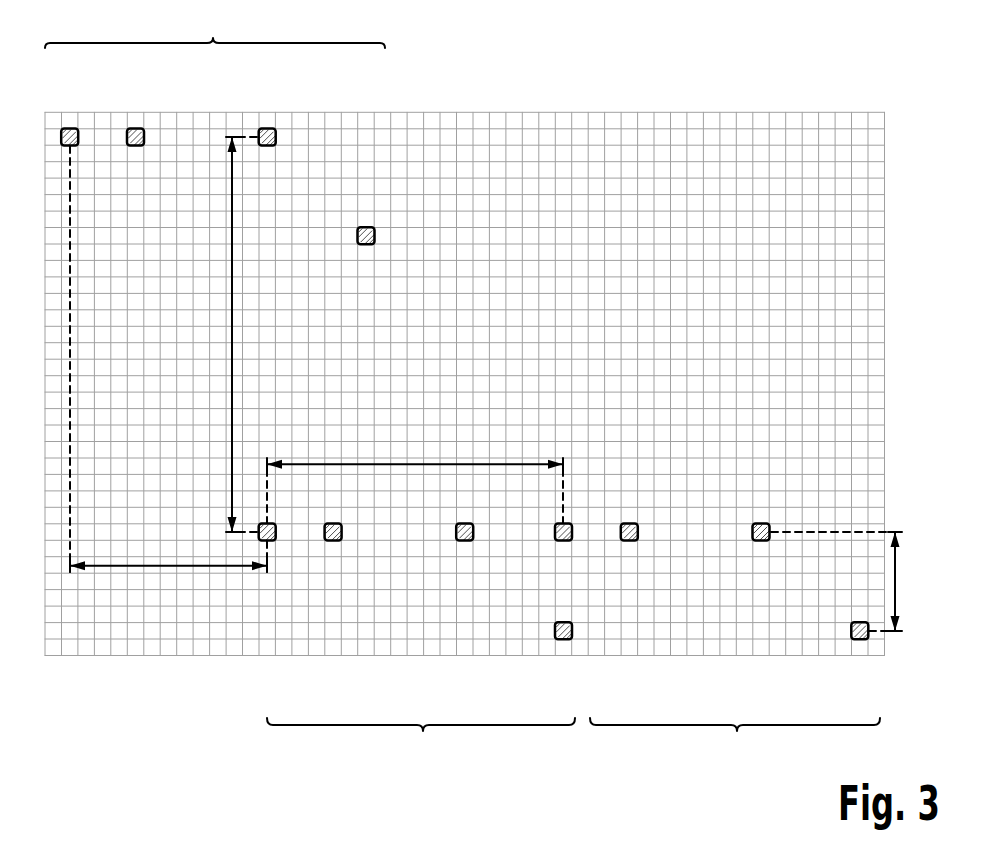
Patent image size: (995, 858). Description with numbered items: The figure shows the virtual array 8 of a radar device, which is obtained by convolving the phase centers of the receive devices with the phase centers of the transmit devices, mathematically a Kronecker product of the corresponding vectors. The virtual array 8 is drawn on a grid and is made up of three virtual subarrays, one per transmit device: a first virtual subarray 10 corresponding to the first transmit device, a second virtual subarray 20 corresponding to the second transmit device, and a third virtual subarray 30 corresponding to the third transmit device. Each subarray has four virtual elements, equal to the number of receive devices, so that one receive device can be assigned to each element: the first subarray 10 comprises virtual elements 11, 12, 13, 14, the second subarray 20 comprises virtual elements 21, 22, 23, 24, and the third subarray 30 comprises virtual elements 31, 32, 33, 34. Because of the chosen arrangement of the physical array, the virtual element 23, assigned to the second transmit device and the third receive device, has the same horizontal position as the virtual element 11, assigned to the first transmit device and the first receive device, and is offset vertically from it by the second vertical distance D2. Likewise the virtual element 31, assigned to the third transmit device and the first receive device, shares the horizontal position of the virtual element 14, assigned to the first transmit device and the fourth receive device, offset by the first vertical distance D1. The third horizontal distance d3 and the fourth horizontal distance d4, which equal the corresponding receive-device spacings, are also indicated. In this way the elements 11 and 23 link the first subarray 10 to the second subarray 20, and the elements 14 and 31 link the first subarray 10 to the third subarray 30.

The virtual array 8 is at (685, 140).
The second virtual subarray 20 is at (215, 26).
The virtual element 21 is at (70, 128).
The virtual element 22 is at (135, 128).
The virtual element 23 is at (267, 128).
The virtual element 24 is at (363, 227).
The first virtual subarray 10 is at (421, 741).
The virtual element 11 is at (271, 541).
The virtual element 12 is at (333, 541).
The virtual element 13 is at (464, 541).
The virtual element 14 is at (563, 640).
The third virtual subarray 30 is at (735, 741).
The virtual element 31 is at (568, 541).
The virtual element 32 is at (632, 541).
The virtual element 33 is at (760, 541).
The virtual element 34 is at (860, 640).
The first vertical distance D1 is at (897, 580).
The second vertical distance D2 is at (232, 335).
The third horizontal distance d3 is at (170, 569).
The fourth horizontal distance d4 is at (415, 460).